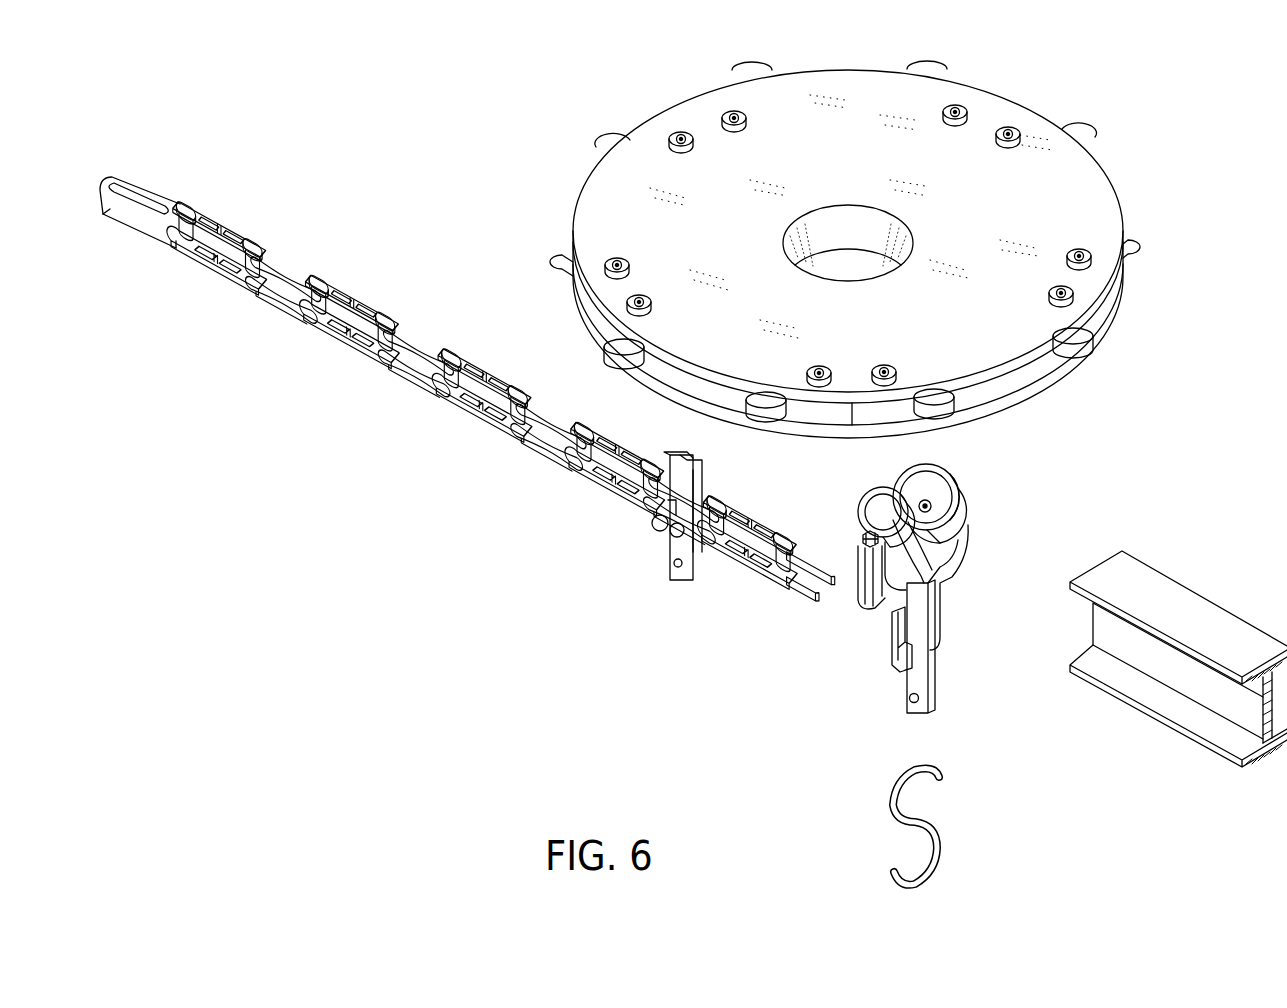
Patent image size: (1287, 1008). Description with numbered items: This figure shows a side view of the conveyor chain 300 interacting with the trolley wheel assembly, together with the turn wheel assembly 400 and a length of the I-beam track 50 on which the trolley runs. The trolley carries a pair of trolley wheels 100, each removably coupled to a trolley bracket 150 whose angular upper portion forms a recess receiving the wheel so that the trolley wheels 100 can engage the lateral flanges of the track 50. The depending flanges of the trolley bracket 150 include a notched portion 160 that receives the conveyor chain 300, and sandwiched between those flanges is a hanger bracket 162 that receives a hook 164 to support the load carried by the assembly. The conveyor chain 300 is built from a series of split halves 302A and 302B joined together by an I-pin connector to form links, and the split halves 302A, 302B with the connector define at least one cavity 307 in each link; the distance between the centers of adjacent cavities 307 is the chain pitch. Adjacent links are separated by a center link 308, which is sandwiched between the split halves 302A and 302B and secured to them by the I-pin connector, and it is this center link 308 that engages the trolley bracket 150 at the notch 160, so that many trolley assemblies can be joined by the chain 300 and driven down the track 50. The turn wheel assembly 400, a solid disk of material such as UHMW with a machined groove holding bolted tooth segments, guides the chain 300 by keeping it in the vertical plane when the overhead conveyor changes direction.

The I-beam track 50 is at (1227, 572).
The trolley wheel 100 is at (917, 585).
The trolley bracket 150 is at (990, 537).
The notched portion 160 is at (940, 630).
The hanger bracket 162 is at (905, 704).
The hook 164 is at (955, 800).
The conveyor chain 300 is at (473, 411).
The split half 302A is at (760, 523).
The split half 302B is at (735, 578).
The cavity 307 is at (582, 482).
The center link 308 is at (828, 568).
The turn wheel assembly 400 is at (1146, 140).